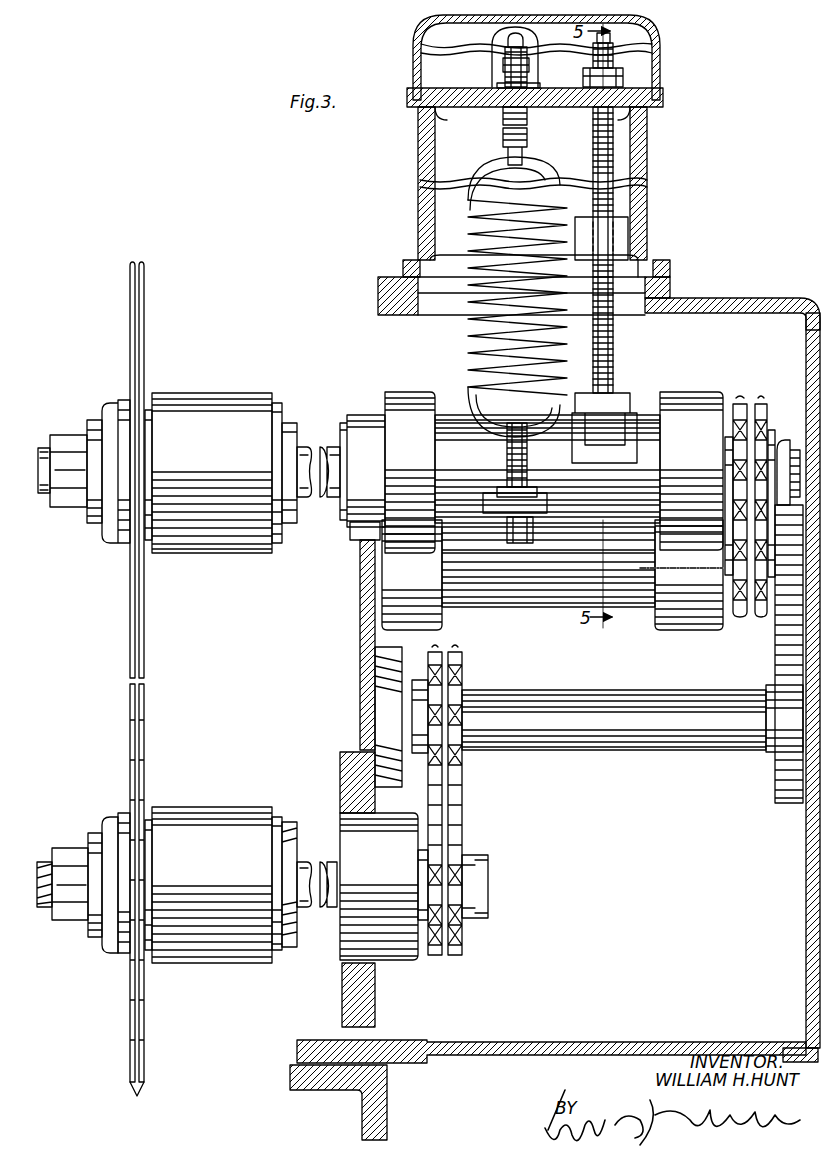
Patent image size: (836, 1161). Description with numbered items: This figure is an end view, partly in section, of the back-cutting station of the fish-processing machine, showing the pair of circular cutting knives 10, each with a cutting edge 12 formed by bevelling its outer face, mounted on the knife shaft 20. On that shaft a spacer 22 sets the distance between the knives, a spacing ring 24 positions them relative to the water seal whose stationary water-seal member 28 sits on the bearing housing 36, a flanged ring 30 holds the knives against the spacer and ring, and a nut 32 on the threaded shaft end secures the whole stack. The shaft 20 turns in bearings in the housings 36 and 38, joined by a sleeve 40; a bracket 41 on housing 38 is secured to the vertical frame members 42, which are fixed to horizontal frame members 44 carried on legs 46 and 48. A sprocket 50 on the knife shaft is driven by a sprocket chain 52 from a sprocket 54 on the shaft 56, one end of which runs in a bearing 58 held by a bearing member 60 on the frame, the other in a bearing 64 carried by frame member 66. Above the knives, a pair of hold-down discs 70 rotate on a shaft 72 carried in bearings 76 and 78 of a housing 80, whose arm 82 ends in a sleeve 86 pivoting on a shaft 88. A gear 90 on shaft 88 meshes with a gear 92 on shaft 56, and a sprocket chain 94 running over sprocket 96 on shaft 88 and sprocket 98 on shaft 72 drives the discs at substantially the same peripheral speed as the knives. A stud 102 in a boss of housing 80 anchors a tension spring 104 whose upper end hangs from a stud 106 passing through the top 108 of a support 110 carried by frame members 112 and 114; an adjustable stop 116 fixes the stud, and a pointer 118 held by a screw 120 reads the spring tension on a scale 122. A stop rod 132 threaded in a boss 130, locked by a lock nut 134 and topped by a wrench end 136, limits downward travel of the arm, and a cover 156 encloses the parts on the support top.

The circular cutting knives 10 is at (130, 722).
The cutting edge 12 is at (137, 1096).
The knife shaft 20 is at (44, 908).
The spacer 22 is at (122, 818).
The spacing ring 24 is at (150, 952).
The stationary water-seal member 28 is at (212, 963).
The flanged ring 30 is at (110, 951).
The nut 32 is at (75, 918).
The bearing housing 36 is at (277, 952).
The bearing housing 38 is at (388, 958).
The sleeve 40 is at (290, 822).
The bracket 41 is at (345, 760).
The vertical frame members 42 is at (360, 658).
The horizontal frame members 44 is at (570, 1042).
The leg 46 is at (387, 1088).
The leg 48 is at (800, 1046).
The sprocket 50 is at (457, 955).
The sprocket chain 52 is at (463, 818).
The sprocket 54 is at (462, 664).
The shaft 56 is at (557, 700).
The bearing 58 is at (418, 684).
The bearing member 60 is at (400, 664).
The bearing 64 is at (775, 778).
The frame member 66 is at (806, 841).
The hold-down discs 70 is at (134, 262).
The shaft 72 is at (45, 500).
The bearing 76 is at (270, 545).
The bearing 78 is at (323, 497).
The housing 80 is at (362, 418).
The arm 82 is at (406, 402).
The sleeve 86 is at (545, 600).
The shaft 88 is at (672, 572).
The gear 90 is at (797, 452).
The gear 92 is at (766, 758).
The sprocket chain 94 is at (772, 430).
The sprocket 96 is at (740, 617).
The sprocket 98 is at (761, 398).
The stud 102 is at (507, 460).
The tension spring 104 is at (475, 347).
The stud 106 is at (504, 134).
The top 108 is at (455, 93).
The support 110 is at (420, 190).
The frame member 112 is at (730, 293).
The frame member 114 is at (378, 298).
The adjustable stop 116 is at (528, 80).
The pointer 118 is at (524, 48).
The screw 120 is at (505, 48).
The scale 122 is at (530, 65).
The boss 130 is at (630, 234).
The stop rod 132 is at (614, 150).
The lock nut 134 is at (624, 77).
The wrench end 136 is at (611, 38).
The cover 156 is at (614, 55).